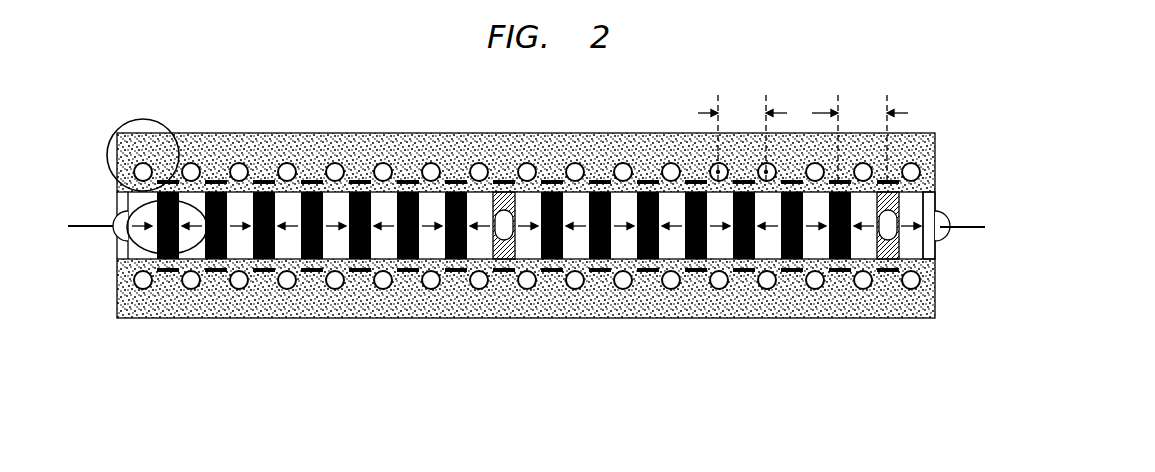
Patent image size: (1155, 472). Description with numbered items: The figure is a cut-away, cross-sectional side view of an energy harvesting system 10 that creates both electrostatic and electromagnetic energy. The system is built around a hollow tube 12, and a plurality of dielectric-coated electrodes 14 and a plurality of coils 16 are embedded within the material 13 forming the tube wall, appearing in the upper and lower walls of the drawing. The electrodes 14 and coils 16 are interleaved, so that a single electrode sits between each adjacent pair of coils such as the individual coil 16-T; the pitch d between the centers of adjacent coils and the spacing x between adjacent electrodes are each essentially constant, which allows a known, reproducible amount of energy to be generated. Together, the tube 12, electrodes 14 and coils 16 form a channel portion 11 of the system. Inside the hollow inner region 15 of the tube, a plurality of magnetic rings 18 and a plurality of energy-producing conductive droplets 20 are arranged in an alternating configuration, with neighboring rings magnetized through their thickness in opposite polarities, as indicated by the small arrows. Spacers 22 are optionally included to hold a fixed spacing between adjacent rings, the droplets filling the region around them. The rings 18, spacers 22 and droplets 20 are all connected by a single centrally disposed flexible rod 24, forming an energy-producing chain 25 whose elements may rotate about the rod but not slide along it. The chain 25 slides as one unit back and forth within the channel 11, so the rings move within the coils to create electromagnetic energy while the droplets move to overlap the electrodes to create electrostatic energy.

The energy harvesting system 10 is at (1052, 142).
The channel portion 11 is at (143, 118).
The hollow tube 12 is at (913, 151).
The material forming tube 13 is at (192, 140).
The dielectric-coated electrodes 14 is at (845, 270).
The hollow inner region 15 is at (935, 196).
The coils 16 is at (623, 282).
The individual coil 16-T is at (383, 282).
The magnetic rings 18 is at (283, 202).
The energy-producing droplets 20 is at (450, 193).
The spacers 22 is at (505, 200).
The flexible rod 24 is at (74, 226).
The energy-producing chain 25 is at (150, 244).